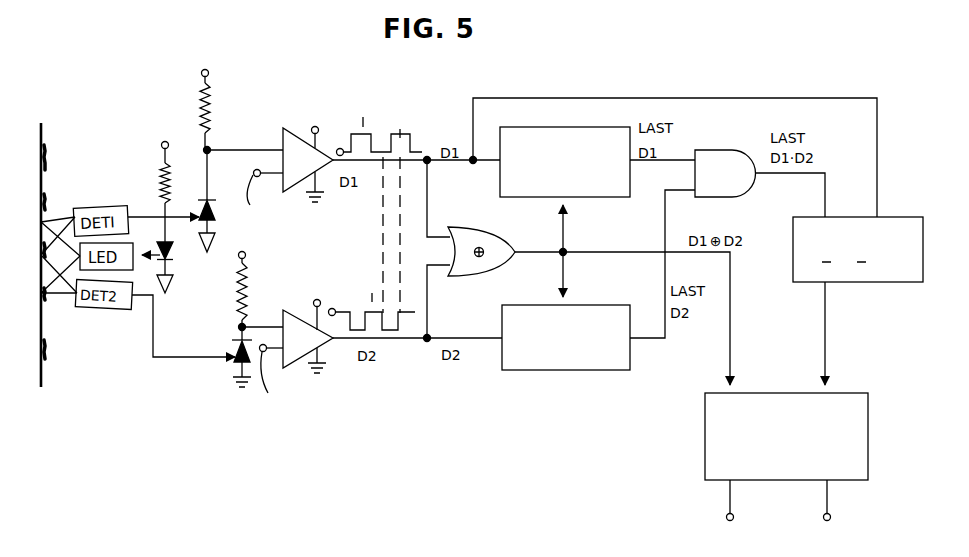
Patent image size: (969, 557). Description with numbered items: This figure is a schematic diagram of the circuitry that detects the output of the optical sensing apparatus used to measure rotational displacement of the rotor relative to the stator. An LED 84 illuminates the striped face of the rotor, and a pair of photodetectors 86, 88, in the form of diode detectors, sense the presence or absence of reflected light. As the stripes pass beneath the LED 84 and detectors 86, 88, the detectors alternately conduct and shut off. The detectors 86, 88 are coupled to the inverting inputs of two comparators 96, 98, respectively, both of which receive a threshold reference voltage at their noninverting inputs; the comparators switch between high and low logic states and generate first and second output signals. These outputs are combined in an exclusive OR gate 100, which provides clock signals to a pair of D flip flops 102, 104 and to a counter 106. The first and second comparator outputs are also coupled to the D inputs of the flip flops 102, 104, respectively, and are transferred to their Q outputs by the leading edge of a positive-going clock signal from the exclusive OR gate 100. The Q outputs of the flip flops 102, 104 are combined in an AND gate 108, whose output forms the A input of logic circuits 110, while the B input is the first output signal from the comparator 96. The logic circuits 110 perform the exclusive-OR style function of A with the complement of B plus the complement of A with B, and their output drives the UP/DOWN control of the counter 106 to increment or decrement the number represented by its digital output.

The LED 84 is at (178, 256).
The photodetector 86 is at (207, 199).
The photodetector 88 is at (227, 361).
The comparator 96 is at (285, 128).
The comparator 98 is at (294, 310).
The exclusive OR gate 100 is at (497, 225).
The D flip flop 102 is at (572, 125).
The D flip flop 104 is at (532, 312).
The counter 106 is at (712, 428).
The AND gate 108 is at (707, 160).
The logic circuits 110 is at (913, 268).